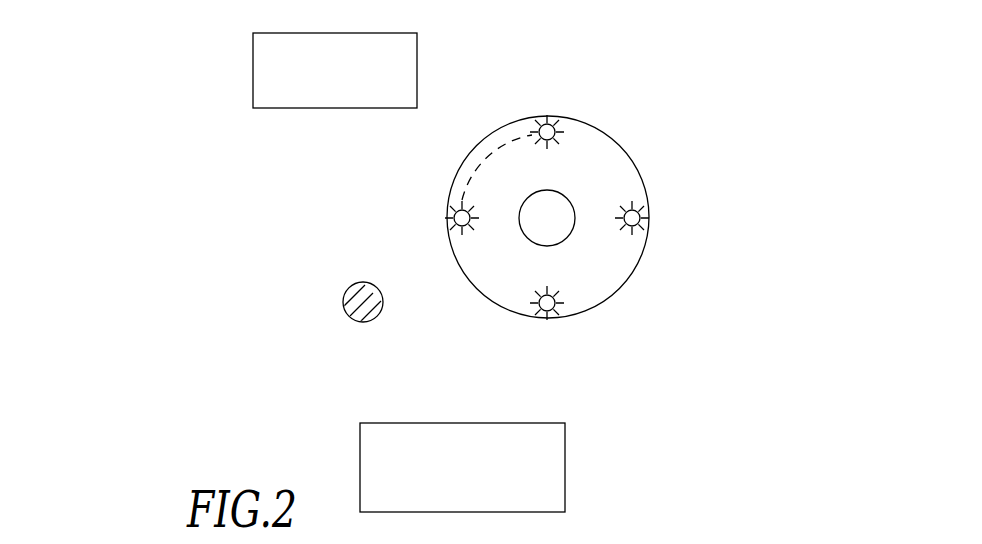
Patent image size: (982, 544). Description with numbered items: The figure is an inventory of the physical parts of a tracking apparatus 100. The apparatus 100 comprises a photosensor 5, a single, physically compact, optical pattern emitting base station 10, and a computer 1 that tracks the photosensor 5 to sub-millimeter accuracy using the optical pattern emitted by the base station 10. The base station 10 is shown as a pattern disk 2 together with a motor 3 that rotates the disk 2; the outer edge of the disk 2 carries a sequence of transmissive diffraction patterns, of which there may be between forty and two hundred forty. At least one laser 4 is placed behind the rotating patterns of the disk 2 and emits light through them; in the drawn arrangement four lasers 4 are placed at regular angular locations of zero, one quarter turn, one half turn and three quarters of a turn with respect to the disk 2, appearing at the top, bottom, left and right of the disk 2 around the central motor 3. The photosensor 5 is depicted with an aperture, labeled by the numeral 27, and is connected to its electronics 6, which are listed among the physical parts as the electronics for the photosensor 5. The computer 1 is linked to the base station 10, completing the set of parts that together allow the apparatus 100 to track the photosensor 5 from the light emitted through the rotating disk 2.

The computer 1 is at (517, 187).
The pattern disk 2 is at (560, 113).
The motor 3 is at (568, 257).
The laser 4 is at (655, 228).
The photosensor 5 is at (420, 420).
The electronics for photosensor 6 is at (462, 467).
The base station 10 is at (665, 172).
The aperture 27 is at (308, 331).
The tracking apparatus 100 is at (160, 405).